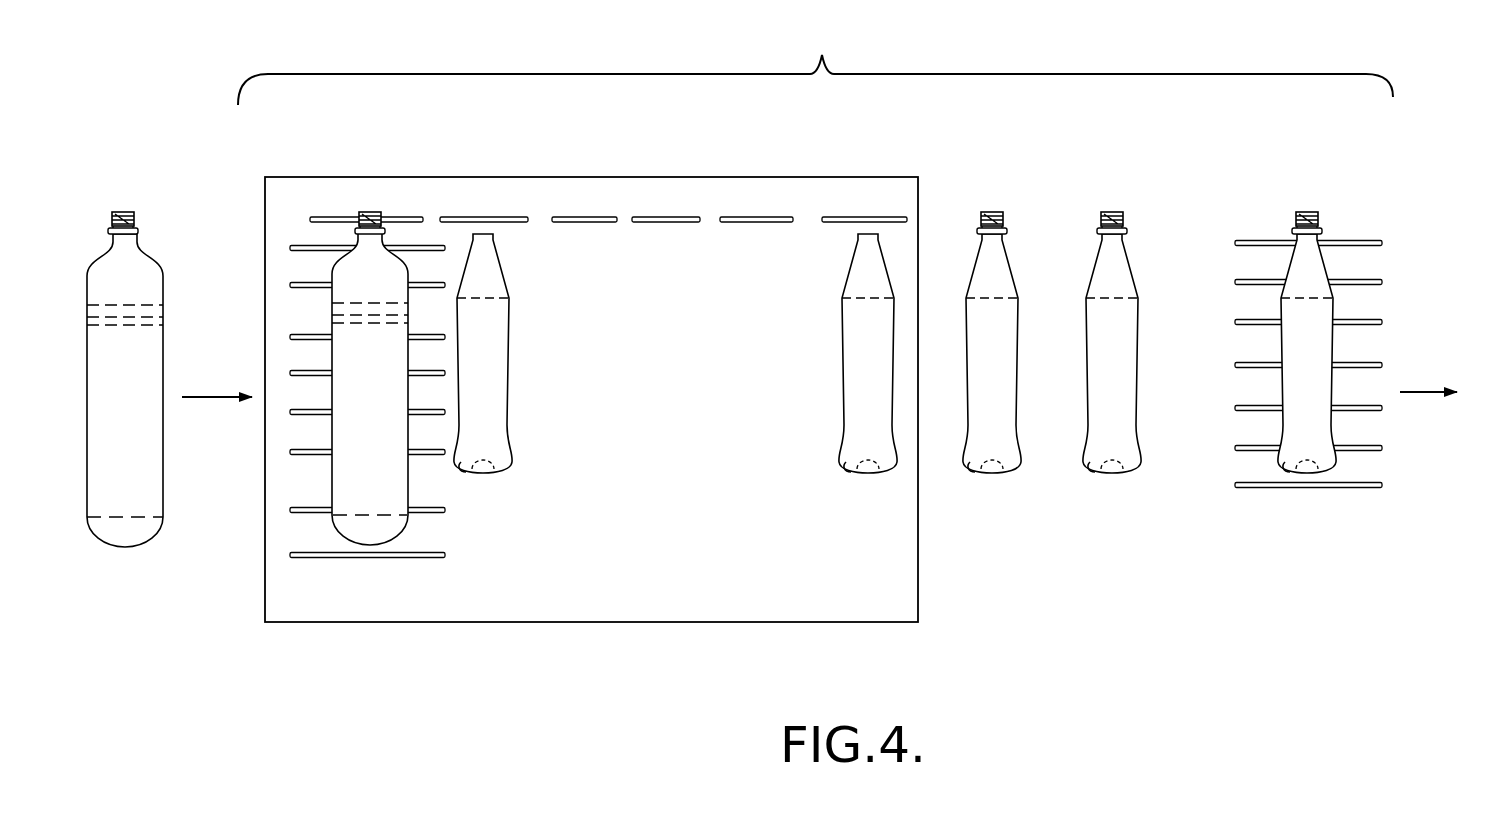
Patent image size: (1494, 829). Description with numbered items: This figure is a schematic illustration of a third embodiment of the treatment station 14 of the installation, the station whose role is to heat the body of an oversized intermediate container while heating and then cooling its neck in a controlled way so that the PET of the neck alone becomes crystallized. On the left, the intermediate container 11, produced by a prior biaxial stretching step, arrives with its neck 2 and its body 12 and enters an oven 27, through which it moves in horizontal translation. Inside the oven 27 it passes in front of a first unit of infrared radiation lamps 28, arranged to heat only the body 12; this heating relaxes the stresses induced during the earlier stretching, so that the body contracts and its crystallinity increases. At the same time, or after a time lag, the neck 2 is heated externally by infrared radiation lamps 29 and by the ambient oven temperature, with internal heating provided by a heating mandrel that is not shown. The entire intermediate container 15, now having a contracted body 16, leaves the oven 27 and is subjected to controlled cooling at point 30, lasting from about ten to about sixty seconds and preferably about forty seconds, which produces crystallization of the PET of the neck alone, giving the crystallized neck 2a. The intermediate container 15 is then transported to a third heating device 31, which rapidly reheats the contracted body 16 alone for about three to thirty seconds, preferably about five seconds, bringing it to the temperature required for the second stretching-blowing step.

The treatment station 14 is at (815, 62).
The neck 2 is at (137, 222).
The crystallized neck 2a is at (1100, 212).
The intermediate container 11 is at (361, 422).
The body 12 is at (353, 487).
The intermediate container with contracted body 15 is at (489, 379).
The contracted body 16 is at (488, 427).
The oven 27 is at (672, 512).
The infrared radiation lamps 28 is at (305, 284).
The infrared radiation lamps 29 is at (325, 217).
The controlled cooling point 30 is at (1032, 540).
The third heating device 31 is at (1373, 319).